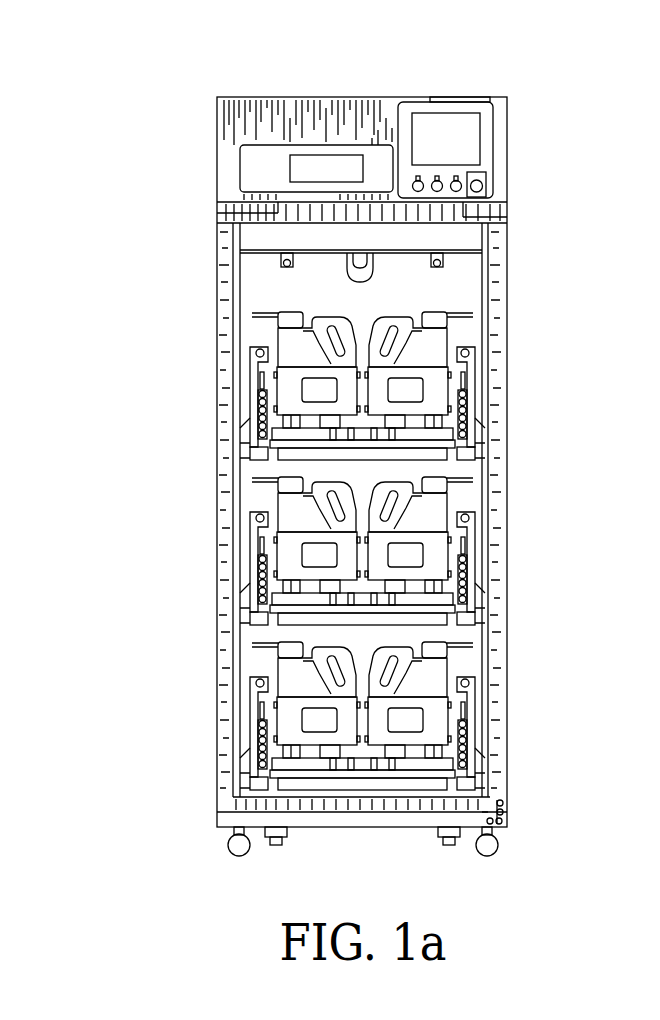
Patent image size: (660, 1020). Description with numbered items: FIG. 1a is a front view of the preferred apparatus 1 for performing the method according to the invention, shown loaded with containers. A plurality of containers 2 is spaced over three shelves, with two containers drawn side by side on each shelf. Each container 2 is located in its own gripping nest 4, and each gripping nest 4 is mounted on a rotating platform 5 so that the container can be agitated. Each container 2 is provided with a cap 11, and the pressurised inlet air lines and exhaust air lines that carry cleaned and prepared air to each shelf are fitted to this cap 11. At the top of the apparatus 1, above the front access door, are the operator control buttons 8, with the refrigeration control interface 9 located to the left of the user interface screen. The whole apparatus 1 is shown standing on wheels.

The apparatus 1 is at (325, 448).
The container 2 is at (423, 518).
The gripping nest 4 is at (292, 715).
The rotating platform 5 is at (257, 750).
The operator control buttons 8 is at (487, 188).
The refrigeration control interface 9 is at (305, 167).
The cap 11 is at (440, 302).